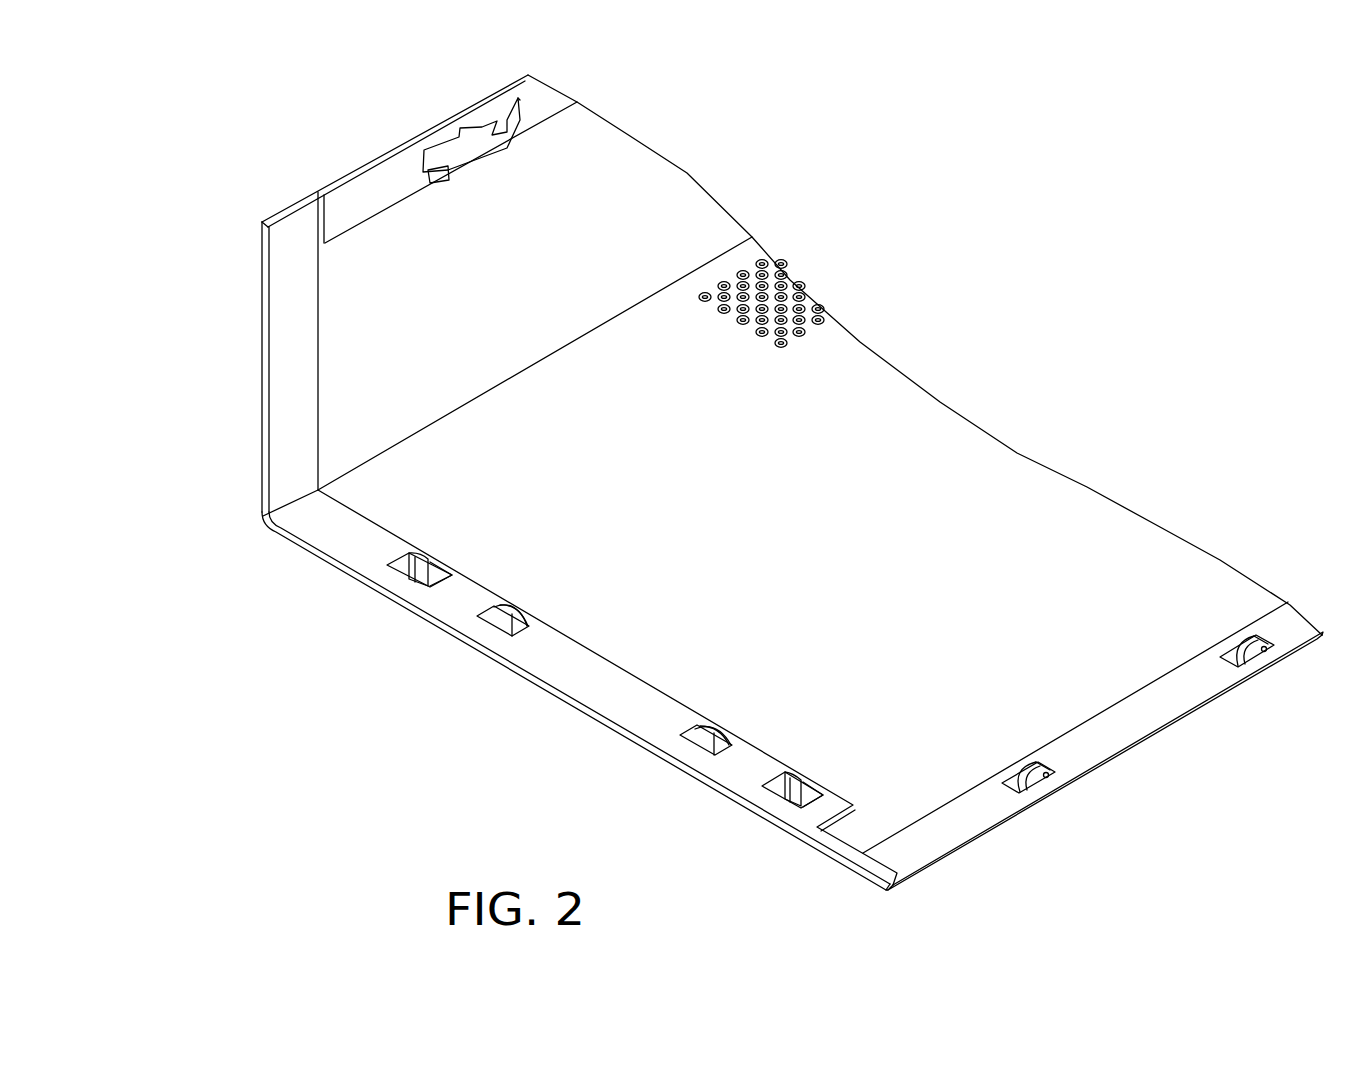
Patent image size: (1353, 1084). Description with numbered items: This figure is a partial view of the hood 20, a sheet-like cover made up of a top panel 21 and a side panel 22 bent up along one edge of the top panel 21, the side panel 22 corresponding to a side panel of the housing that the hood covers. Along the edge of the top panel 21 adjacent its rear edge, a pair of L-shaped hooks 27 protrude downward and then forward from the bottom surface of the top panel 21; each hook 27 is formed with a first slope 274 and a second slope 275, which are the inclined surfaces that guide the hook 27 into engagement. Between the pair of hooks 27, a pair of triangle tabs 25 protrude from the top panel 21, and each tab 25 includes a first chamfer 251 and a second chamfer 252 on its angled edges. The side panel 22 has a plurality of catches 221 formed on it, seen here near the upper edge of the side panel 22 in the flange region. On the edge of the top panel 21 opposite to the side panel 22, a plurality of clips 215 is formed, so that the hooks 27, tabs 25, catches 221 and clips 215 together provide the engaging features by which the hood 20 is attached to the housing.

The hood 20 is at (257, 400).
The top panel 21 is at (1088, 547).
The side panel 22 is at (417, 228).
The catch 221 is at (477, 147).
The L-shaped hook 27 is at (406, 578).
The first slope 274 is at (407, 552).
The second slope 275 is at (437, 580).
The triangle tab 25 is at (702, 743).
The first chamfer 251 is at (693, 730).
The second chamfer 252 is at (714, 750).
The clip 215 is at (1253, 650).